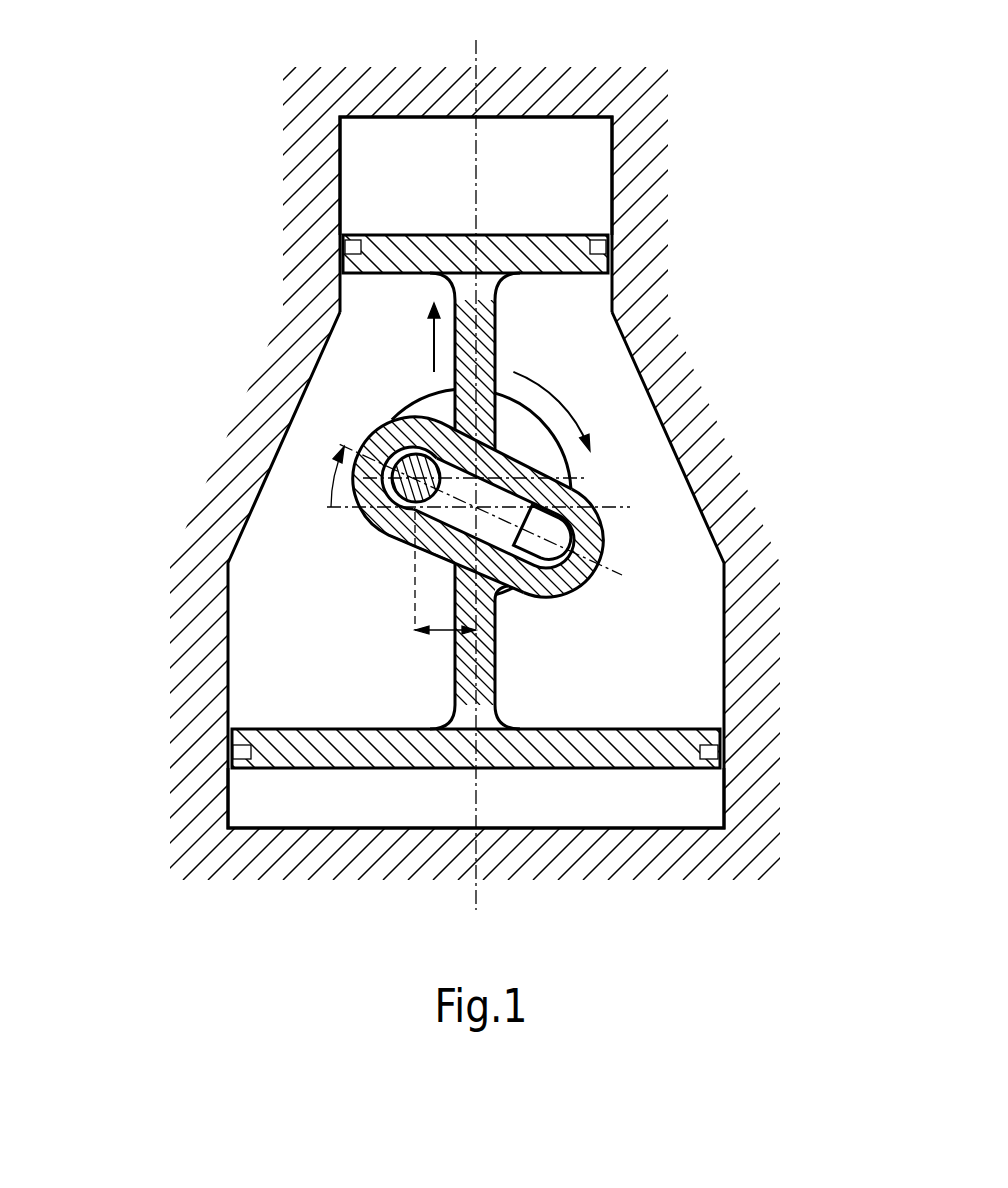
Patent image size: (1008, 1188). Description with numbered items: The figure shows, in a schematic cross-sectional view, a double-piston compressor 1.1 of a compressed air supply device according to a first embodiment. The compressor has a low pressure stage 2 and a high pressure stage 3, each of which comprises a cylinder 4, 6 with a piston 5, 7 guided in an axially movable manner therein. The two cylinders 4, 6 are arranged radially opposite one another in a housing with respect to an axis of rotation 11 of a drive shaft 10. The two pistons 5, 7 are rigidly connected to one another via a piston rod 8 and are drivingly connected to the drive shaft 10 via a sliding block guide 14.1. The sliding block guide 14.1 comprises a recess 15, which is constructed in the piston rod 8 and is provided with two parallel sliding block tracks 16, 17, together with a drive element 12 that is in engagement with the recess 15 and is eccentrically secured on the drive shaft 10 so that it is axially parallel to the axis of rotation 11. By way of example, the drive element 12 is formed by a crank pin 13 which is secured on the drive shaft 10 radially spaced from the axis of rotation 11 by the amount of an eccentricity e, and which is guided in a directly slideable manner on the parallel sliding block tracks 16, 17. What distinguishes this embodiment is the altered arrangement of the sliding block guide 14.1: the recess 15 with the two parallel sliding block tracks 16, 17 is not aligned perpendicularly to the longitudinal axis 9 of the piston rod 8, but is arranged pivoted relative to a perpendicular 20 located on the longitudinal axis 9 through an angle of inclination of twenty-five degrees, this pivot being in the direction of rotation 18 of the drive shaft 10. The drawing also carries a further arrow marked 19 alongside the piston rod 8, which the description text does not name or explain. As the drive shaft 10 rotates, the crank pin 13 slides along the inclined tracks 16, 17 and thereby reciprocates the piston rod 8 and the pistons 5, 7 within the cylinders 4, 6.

The double-piston compressor 1.1 is at (768, 200).
The low pressure stage 2 is at (155, 770).
The high pressure stage 3 is at (252, 188).
The cylinder 4 is at (588, 811).
The piston 5 is at (371, 748).
The cylinder 6 is at (533, 190).
The piston 7 is at (407, 253).
The piston rod 8 is at (497, 653).
The longitudinal axis 9 is at (476, 58).
The drive shaft 10 is at (525, 438).
The axis of rotation 11 is at (440, 415).
The drive element 12 is at (255, 532).
The crank pin 13 is at (395, 482).
The sliding block guide 14.1 is at (347, 435).
The recess 15 is at (458, 522).
The sliding block track 16 is at (570, 558).
The sliding block track 17 is at (600, 563).
The direction of rotation 18 is at (560, 368).
The stroke direction 19 is at (433, 343).
The perpendicular 20 is at (605, 507).
The eccentricity e is at (440, 635).